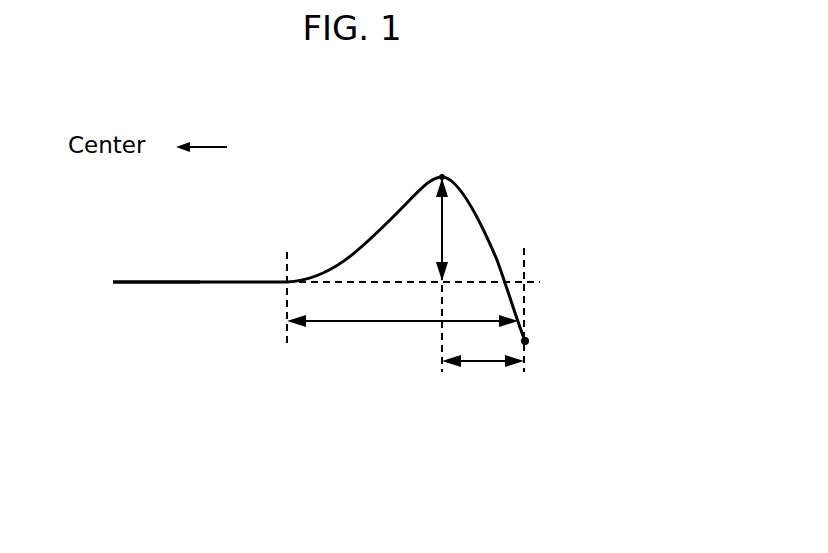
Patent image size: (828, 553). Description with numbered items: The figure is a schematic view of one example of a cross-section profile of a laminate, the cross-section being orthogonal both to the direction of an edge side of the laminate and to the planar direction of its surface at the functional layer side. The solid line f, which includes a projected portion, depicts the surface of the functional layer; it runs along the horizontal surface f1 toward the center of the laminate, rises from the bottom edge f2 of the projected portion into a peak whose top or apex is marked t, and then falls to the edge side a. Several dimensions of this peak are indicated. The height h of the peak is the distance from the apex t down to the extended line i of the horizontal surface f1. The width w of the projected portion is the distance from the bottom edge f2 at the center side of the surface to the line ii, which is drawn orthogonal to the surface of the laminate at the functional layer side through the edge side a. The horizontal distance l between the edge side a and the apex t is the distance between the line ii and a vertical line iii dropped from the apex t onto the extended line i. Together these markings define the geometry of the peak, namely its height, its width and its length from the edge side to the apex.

The surface of the functional layer f is at (390, 221).
The horizontal surface f1 is at (173, 283).
The bottom edge of the projected portion f2 is at (287, 287).
The top of the peak t is at (446, 177).
The height of the peak h is at (445, 222).
The width of the peak w is at (378, 323).
The horizontal distance l is at (485, 363).
The edge side a is at (530, 342).
The extended line i is at (533, 282).
The line orthogonal to the surface ii is at (525, 257).
The vertical reference line through top iii is at (440, 337).